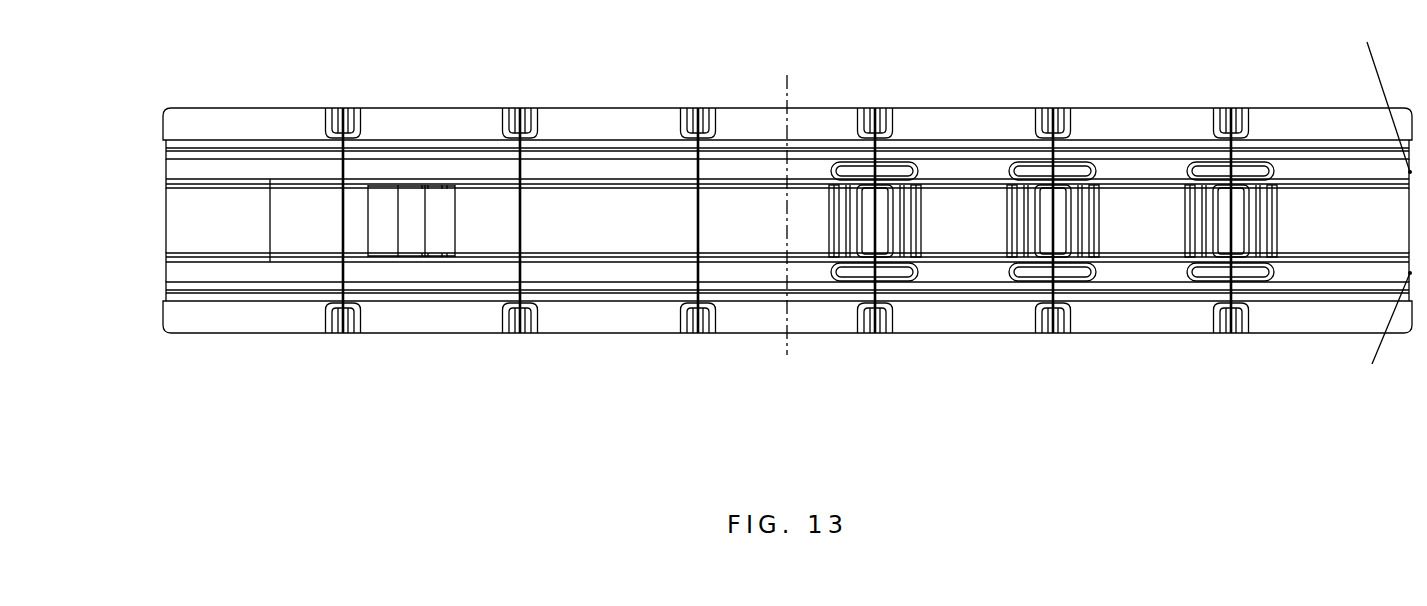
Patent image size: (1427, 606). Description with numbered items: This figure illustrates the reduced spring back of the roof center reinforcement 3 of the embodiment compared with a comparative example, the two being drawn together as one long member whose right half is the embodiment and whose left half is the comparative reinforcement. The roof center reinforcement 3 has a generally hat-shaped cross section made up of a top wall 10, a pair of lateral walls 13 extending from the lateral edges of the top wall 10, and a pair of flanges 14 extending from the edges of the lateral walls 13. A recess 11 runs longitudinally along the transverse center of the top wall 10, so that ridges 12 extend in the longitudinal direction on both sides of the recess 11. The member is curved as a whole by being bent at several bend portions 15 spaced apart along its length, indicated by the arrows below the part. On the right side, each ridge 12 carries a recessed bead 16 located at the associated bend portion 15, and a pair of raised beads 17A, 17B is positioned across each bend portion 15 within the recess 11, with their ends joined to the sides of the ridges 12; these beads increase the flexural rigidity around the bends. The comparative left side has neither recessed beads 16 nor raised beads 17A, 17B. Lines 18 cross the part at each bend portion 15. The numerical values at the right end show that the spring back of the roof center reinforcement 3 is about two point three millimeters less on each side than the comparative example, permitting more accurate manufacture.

The roof center reinforcement 3 is at (867, 75).
The top wall 10 is at (725, 223).
The recess 11 is at (170, 221).
The ridges 12 is at (180, 168).
The lateral walls 13 is at (183, 148).
The flanges 14 is at (178, 127).
The bend portions 15 is at (775, 274).
The recessed beads 16 is at (913, 162).
The raised bead 17A is at (843, 220).
The raised bead 17B is at (909, 220).
The transverse line 18 is at (345, 287).